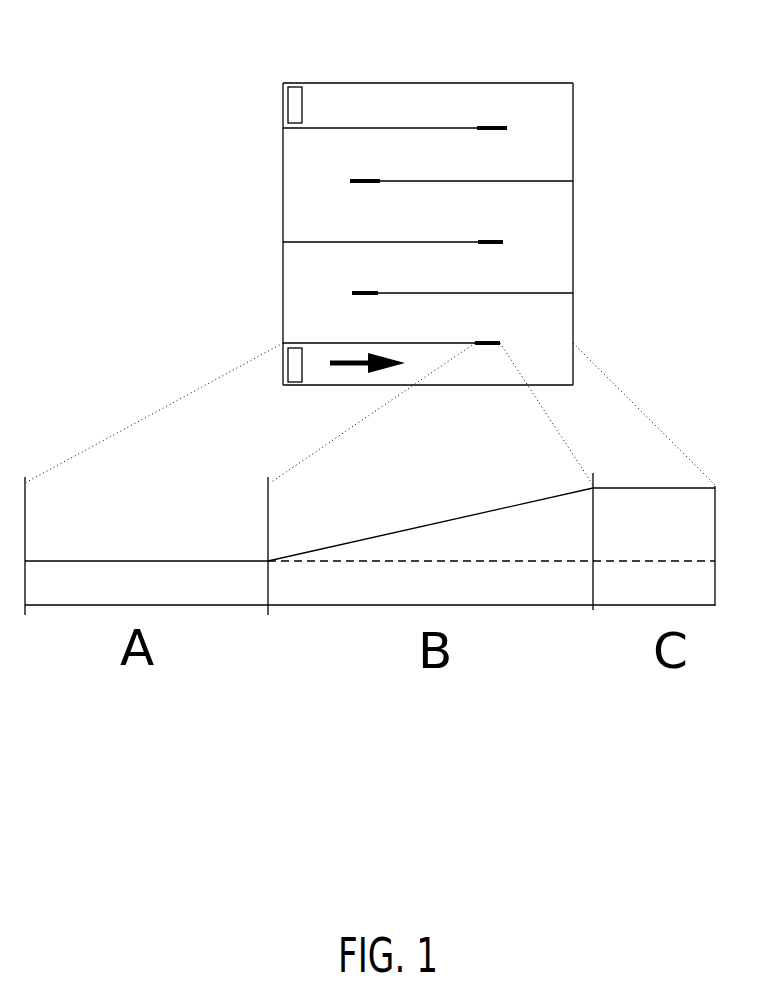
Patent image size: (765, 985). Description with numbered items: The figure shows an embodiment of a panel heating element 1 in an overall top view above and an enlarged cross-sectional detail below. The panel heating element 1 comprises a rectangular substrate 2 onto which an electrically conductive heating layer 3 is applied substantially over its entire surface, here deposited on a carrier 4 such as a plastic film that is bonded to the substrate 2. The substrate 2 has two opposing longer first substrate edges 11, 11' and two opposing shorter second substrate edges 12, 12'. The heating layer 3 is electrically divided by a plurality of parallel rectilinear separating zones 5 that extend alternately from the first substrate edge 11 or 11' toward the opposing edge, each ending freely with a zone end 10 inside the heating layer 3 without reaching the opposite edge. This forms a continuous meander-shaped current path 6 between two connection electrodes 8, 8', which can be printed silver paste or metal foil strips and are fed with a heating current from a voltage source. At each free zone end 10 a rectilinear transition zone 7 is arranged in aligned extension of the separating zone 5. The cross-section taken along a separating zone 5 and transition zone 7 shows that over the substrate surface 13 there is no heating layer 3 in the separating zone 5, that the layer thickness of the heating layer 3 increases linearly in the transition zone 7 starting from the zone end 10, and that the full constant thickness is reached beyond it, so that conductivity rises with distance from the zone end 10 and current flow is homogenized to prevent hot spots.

The panel heating element 1 is at (244, 47).
The substrate 2 is at (135, 602).
The heating layer 3 is at (562, 126).
The carrier 4 is at (585, 266).
The separating zone 5 is at (373, 127).
The current path 6 is at (345, 367).
The transition zone 7 is at (497, 127).
The connection electrode 8 is at (264, 103).
The connection electrode 8' is at (263, 389).
The zone end 10 is at (478, 127).
The first substrate edge 11 is at (254, 234).
The first substrate edge 11' is at (604, 234).
The second substrate edge 12 is at (428, 57).
The second substrate edge 12' is at (428, 411).
The substrate surface 13 is at (150, 550).